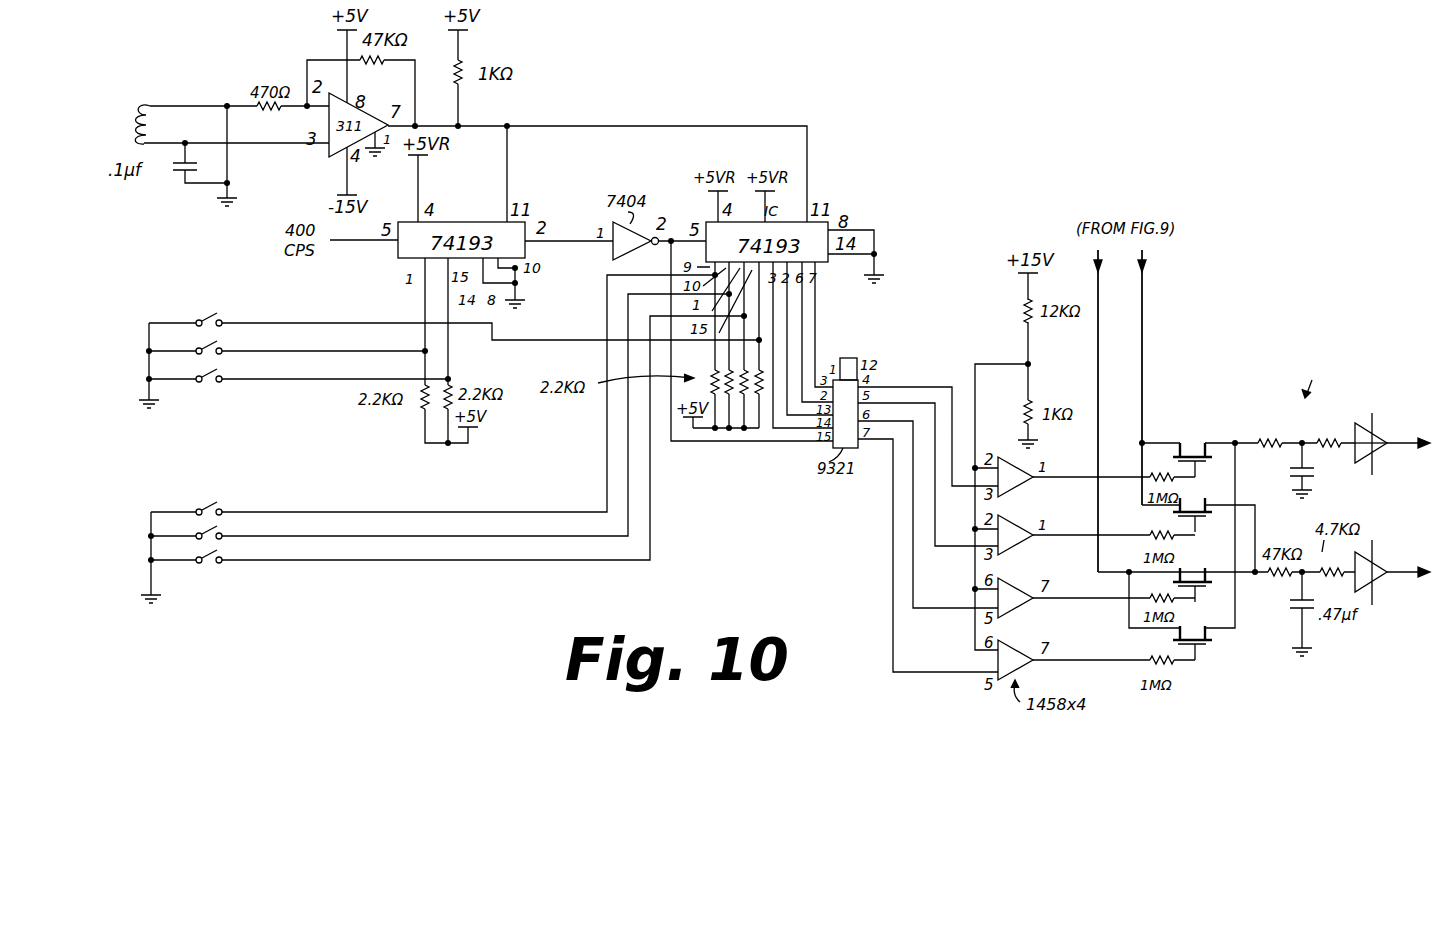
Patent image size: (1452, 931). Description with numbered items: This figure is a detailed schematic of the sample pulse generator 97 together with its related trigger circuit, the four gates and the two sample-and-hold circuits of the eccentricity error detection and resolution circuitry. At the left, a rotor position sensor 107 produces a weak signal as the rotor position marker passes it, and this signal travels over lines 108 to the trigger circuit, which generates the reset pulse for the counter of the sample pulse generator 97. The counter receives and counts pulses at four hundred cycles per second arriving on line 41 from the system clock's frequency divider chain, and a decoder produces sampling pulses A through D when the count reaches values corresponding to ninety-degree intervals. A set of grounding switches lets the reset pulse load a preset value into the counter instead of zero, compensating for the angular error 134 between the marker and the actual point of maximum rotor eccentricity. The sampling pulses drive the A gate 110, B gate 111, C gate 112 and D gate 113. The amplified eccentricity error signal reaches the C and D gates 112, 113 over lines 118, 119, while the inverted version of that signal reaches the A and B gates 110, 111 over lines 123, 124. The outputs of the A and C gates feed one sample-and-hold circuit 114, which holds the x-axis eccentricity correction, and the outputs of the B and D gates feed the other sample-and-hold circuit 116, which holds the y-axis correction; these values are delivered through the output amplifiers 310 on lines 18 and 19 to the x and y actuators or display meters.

The rotor position sensor 107 is at (136, 122).
The lines 108 is at (162, 146).
The line 41 is at (334, 243).
The angular error 134 is at (206, 475).
The sample pulse generator 97 is at (685, 508).
The A gate 110 is at (1194, 437).
The B gate 111 is at (1193, 502).
The C gate 112 is at (1192, 566).
The D gate 113 is at (1192, 630).
The sample-and-hold circuit 114 is at (1308, 382).
The sample-and-hold circuit 116 is at (1356, 505).
The line 118 is at (1098, 302).
The line 119 is at (1171, 411).
The line 123 is at (1142, 253).
The line 124 is at (1193, 377).
The operational amplifier 310 is at (1377, 435).
The line 18 is at (1393, 455).
The line 19 is at (1390, 565).